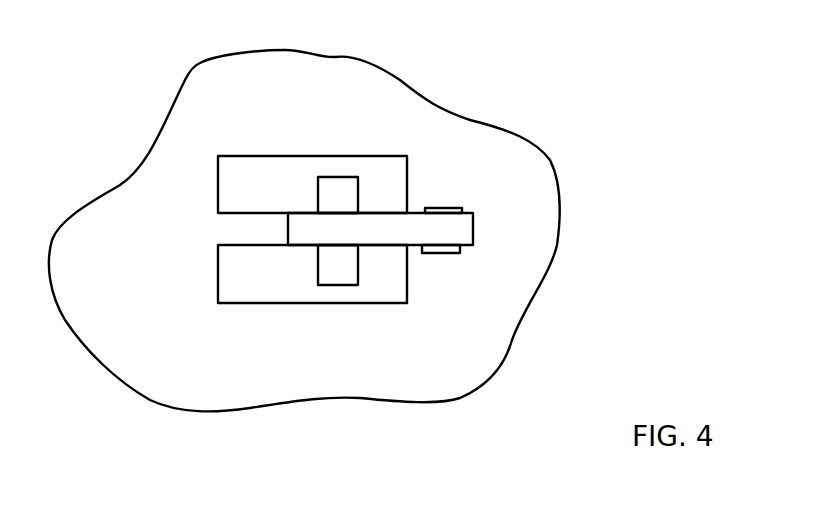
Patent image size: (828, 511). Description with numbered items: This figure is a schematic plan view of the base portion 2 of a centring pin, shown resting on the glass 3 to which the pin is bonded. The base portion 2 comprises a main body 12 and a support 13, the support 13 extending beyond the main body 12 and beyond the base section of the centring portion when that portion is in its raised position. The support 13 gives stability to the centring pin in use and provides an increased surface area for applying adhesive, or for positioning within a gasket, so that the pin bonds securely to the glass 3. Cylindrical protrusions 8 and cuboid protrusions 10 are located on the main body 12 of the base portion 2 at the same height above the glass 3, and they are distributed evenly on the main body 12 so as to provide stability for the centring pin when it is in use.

The base portion 2 is at (392, 138).
The glass 3 is at (487, 362).
The cylindrical protrusion 8 is at (331, 186).
The cuboid protrusion 10 is at (462, 208).
The main body 12 is at (473, 232).
The support 13 is at (238, 282).